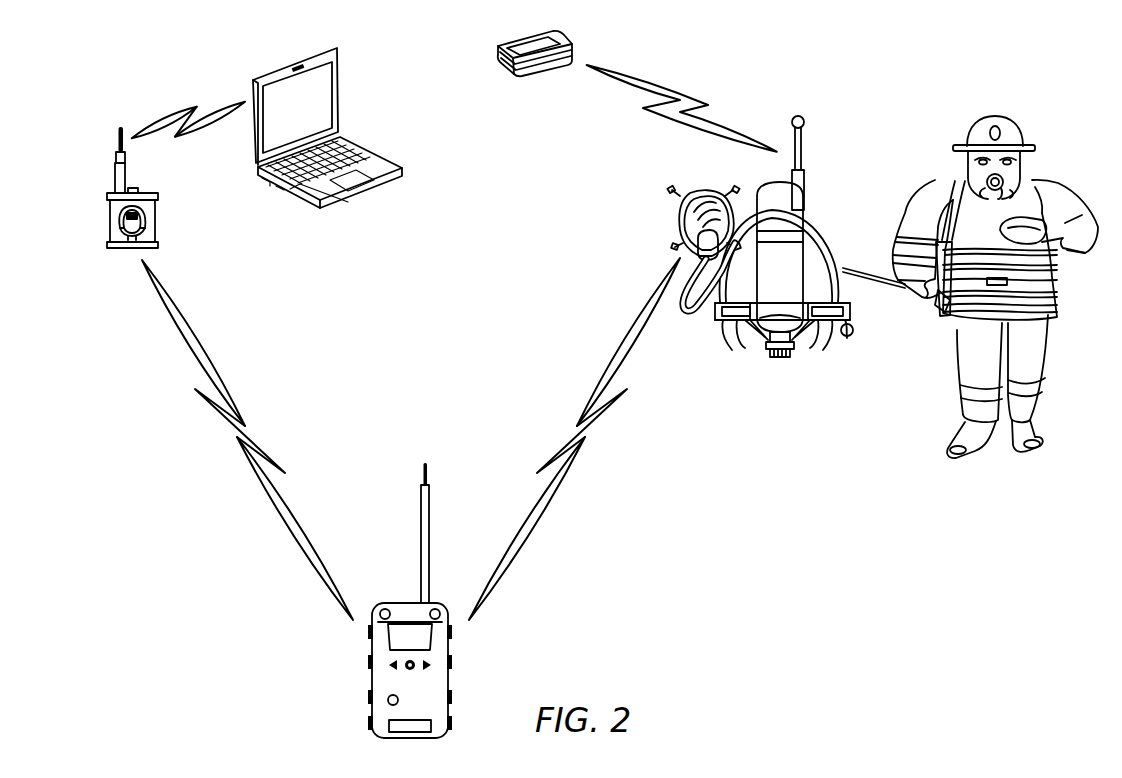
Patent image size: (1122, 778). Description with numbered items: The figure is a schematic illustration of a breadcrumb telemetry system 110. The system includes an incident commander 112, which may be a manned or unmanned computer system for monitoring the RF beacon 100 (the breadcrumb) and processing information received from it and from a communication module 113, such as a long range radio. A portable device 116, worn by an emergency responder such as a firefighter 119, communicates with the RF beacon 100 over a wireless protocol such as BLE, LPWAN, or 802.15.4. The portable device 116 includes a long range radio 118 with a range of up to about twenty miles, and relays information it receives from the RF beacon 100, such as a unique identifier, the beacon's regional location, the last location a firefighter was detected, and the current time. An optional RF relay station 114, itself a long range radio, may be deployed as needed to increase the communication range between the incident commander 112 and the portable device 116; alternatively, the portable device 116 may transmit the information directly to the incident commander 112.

The RF beacon 100 is at (498, 68).
The breadcrumb telemetry system 110 is at (731, 563).
The incident commander 112 is at (339, 92).
The communication module 113 is at (106, 218).
The RF relay station 114 is at (450, 656).
The portable device 116 is at (806, 180).
The long range radio 118 is at (806, 122).
The firefighter 119 is at (952, 178).